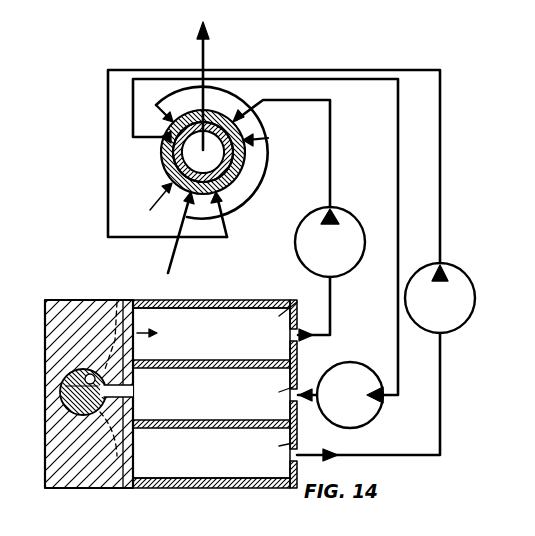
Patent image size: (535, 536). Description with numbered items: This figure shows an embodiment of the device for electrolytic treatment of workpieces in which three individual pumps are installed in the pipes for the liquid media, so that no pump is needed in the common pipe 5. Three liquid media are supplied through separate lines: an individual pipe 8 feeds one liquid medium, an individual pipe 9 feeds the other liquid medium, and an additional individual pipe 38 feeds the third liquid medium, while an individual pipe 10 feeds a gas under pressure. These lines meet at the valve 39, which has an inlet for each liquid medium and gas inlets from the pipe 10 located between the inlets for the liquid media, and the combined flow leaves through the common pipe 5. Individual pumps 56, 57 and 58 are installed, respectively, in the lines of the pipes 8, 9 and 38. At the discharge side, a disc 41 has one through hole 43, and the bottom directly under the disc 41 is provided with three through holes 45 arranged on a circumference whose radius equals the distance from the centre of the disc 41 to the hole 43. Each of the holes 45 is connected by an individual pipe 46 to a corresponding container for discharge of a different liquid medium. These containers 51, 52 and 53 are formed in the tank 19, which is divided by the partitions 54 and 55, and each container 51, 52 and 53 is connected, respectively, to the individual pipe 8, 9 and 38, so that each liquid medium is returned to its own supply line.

The common pipe 5 is at (205, 57).
The individual pipe 8 is at (333, 125).
The individual pipe 9 is at (398, 168).
The individual pipe 10 is at (176, 262).
The tank 19 is at (258, 300).
The additional individual pipe 38 is at (322, 70).
The valve 39 is at (149, 204).
The disc 41 is at (62, 403).
The through hole 43 is at (85, 372).
The through holes 45 is at (62, 383).
The individual pipe 46 is at (117, 301).
The container 51 is at (297, 302).
The container 52 is at (293, 387).
The container 53 is at (293, 443).
The partition 54 is at (197, 360).
The partition 55 is at (197, 420).
The pump 56 is at (307, 214).
The pump 57 is at (360, 361).
The pump 58 is at (425, 262).